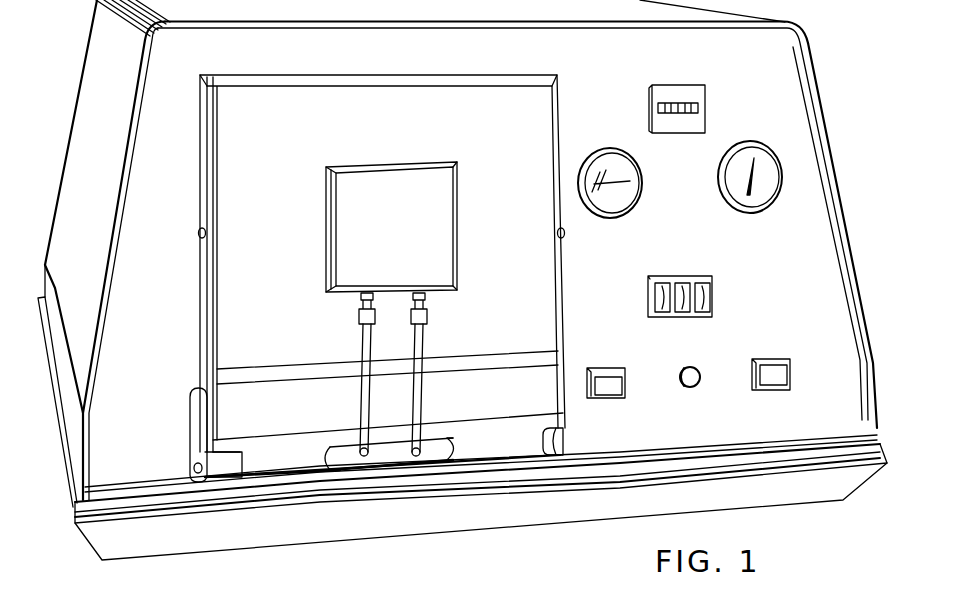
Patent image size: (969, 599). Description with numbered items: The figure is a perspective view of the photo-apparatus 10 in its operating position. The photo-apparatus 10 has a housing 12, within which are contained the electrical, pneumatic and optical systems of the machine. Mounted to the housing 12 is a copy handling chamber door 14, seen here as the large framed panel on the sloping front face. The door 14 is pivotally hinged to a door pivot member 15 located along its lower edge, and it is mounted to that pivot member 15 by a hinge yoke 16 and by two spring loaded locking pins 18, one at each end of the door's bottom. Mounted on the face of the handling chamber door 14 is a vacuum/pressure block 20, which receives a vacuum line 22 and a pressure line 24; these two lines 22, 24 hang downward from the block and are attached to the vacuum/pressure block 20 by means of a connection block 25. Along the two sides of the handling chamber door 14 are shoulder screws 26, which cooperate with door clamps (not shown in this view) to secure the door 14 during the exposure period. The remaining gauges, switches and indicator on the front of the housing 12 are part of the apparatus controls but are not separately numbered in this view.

The photo-apparatus 10 is at (826, 138).
The housing 12 is at (838, 190).
The copy handling chamber door 14 is at (347, 75).
The door pivot member 15 is at (388, 453).
The hinge yoke 16 is at (287, 458).
The spring loaded locking pin 18 is at (193, 468).
The vacuum/pressure block 20 is at (400, 165).
The vacuum line 22 is at (359, 403).
The pressure line 24 is at (421, 404).
The connection block 25 is at (427, 310).
The shoulder screw 26 is at (198, 233).